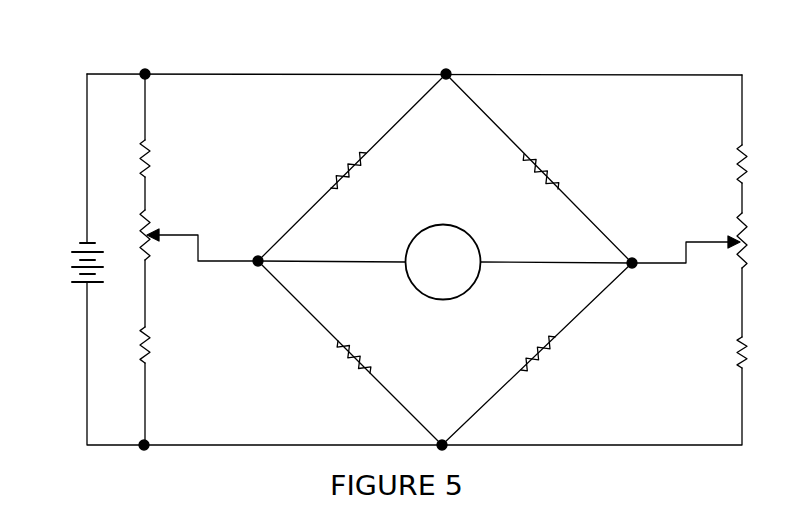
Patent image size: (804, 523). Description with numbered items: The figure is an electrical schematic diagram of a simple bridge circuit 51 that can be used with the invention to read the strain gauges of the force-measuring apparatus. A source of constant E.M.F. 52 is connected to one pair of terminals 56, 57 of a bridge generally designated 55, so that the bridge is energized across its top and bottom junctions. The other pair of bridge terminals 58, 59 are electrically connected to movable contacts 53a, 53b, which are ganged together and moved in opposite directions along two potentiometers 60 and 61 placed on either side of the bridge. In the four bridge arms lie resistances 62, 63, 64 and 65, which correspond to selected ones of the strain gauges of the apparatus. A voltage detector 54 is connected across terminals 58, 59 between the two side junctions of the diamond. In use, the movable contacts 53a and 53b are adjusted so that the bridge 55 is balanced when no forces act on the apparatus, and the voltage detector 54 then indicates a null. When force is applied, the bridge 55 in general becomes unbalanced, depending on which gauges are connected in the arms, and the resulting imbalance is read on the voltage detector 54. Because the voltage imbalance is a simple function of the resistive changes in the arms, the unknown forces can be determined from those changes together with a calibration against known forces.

The bridge circuit 51 is at (360, 73).
The source of constant E.M.F. 52 is at (72, 265).
The movable contact 53a is at (180, 231).
The movable contact 53b is at (712, 247).
The voltage detector 54 is at (471, 282).
The bridge 55 is at (510, 134).
The bridge terminal 56 is at (452, 72).
The bridge terminal 57 is at (444, 438).
The bridge terminal 58 is at (257, 255).
The bridge terminal 59 is at (634, 258).
The potentiometer 60 is at (143, 225).
The potentiometer 61 is at (737, 218).
The resistance 62 is at (347, 166).
The resistance 63 is at (553, 176).
The resistance 64 is at (352, 358).
The resistance 65 is at (545, 356).